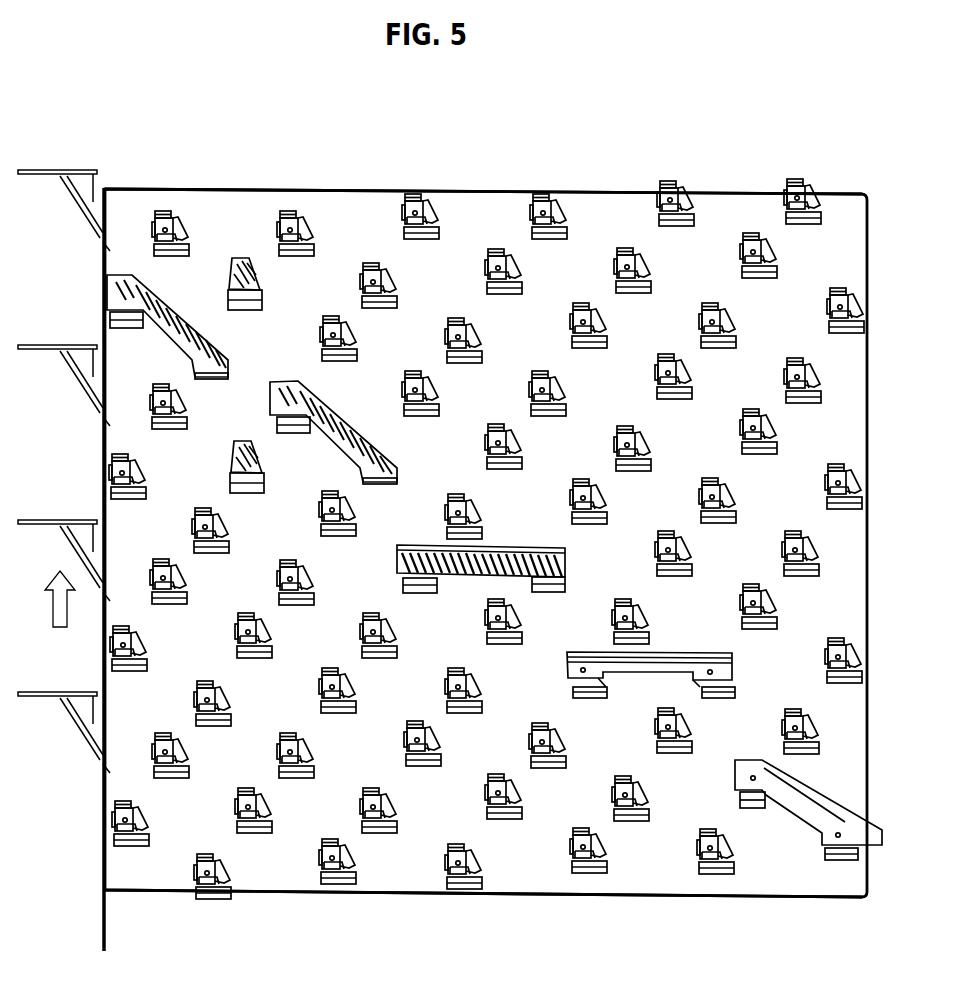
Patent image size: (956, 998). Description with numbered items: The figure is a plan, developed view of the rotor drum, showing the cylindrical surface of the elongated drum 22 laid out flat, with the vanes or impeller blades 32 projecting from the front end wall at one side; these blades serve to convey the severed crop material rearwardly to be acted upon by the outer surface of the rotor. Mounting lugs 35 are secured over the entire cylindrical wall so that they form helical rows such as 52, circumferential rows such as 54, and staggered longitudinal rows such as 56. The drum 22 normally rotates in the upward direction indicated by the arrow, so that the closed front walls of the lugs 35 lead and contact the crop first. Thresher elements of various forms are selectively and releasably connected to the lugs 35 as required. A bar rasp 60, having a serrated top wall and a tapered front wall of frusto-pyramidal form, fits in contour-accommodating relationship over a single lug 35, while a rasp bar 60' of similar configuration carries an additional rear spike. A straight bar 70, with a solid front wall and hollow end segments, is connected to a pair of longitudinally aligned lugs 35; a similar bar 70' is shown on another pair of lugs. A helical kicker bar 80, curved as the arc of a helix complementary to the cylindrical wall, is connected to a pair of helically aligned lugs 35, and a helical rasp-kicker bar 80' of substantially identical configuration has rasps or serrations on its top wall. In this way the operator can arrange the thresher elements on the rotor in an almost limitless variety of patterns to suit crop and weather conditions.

The drum 22 is at (828, 180).
The vanes or impeller blades 32 is at (47, 701).
The mounting lugs 35 is at (444, 874).
The helical rows 52 is at (528, 188).
The circumferential rows 54 is at (415, 177).
The staggered longitudinal rows 56 is at (647, 380).
The bar rasp 60 is at (212, 467).
The rasp bar 60' is at (280, 285).
The straight bar 70 is at (651, 644).
The bar member 70' is at (481, 537).
The helical kicker bar 80 is at (766, 810).
The helical rasp-kicker bar 80' is at (254, 371).